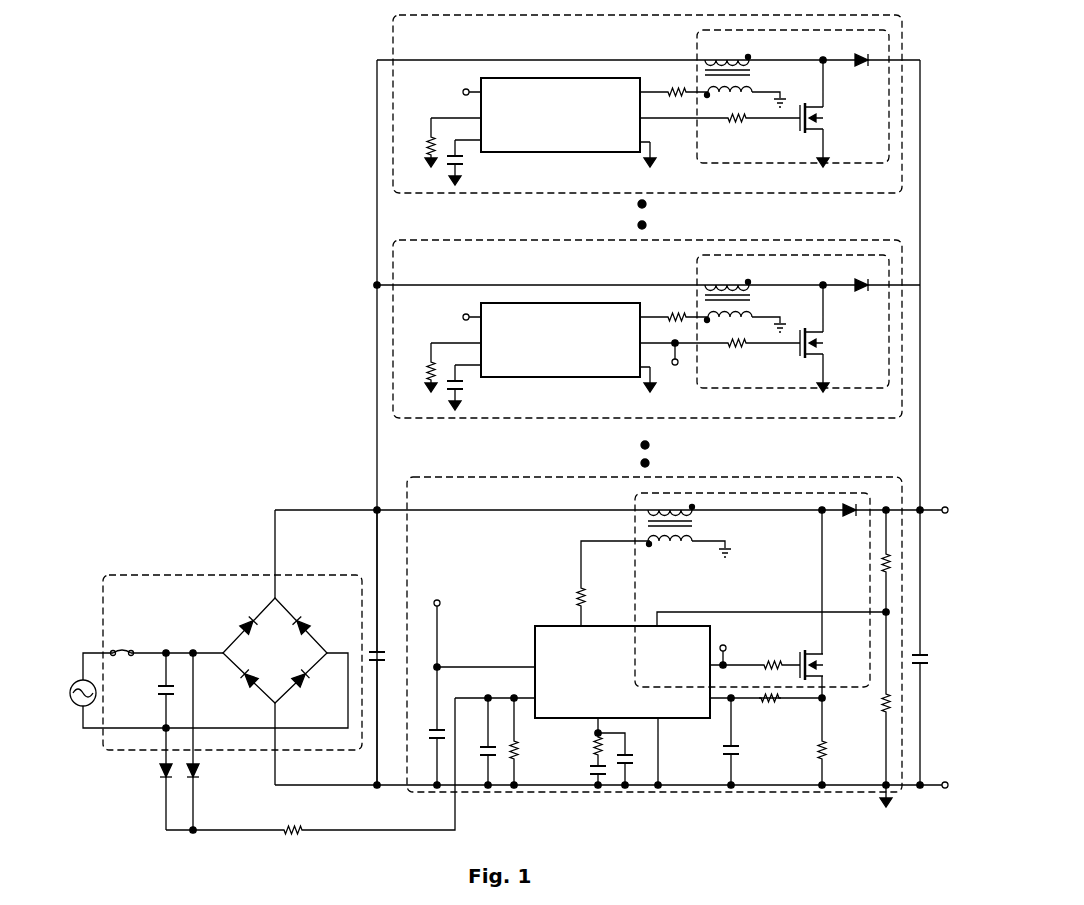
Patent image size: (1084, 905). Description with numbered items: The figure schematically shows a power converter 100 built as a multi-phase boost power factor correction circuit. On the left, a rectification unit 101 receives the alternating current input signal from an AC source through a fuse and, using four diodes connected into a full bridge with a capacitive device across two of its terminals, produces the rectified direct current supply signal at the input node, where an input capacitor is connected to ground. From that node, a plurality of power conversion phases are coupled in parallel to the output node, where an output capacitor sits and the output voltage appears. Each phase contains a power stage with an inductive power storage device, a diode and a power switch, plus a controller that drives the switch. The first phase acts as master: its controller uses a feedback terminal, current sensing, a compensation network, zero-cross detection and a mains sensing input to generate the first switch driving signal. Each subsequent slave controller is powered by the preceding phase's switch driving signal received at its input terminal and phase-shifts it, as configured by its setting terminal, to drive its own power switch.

The power converter 100 is at (161, 28).
The rectification unit 101 is at (166, 572).